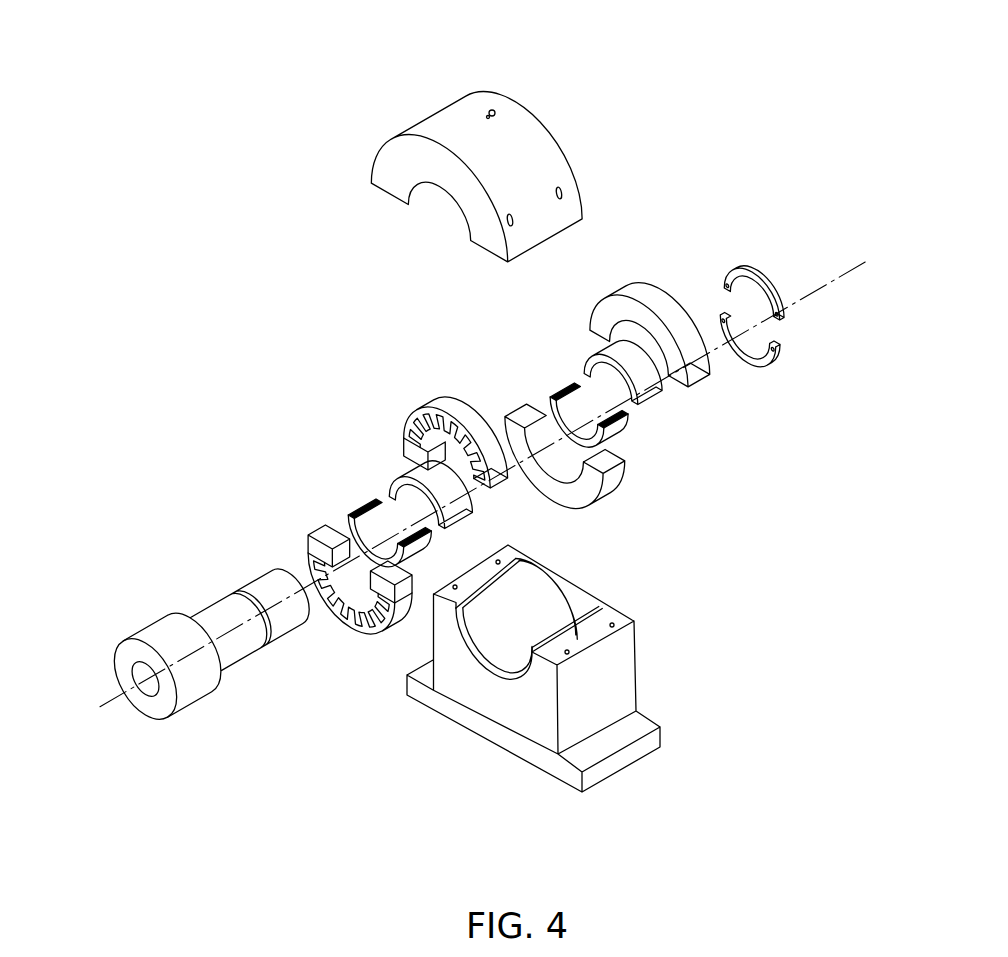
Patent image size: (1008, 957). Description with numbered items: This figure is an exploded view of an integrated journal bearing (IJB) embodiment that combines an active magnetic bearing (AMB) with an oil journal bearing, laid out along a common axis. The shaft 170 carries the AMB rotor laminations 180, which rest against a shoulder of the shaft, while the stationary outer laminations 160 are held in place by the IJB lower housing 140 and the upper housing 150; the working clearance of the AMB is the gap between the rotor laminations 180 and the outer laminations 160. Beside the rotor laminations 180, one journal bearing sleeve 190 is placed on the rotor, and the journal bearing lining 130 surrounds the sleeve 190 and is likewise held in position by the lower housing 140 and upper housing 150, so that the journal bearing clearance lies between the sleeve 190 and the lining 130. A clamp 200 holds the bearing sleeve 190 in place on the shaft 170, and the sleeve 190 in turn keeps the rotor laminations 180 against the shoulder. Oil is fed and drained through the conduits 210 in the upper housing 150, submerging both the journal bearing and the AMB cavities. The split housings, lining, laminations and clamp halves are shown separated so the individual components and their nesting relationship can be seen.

The journal bearing lining 130 is at (652, 302).
The IJB lower housing 140 is at (590, 698).
The upper housing 150 is at (525, 158).
The outer laminations 160 is at (453, 412).
The shaft 170 is at (180, 640).
The AMB rotor laminations 180 is at (431, 485).
The journal bearing sleeve 190 is at (636, 367).
The clamp 200 is at (750, 277).
The conduits 210 is at (493, 113).